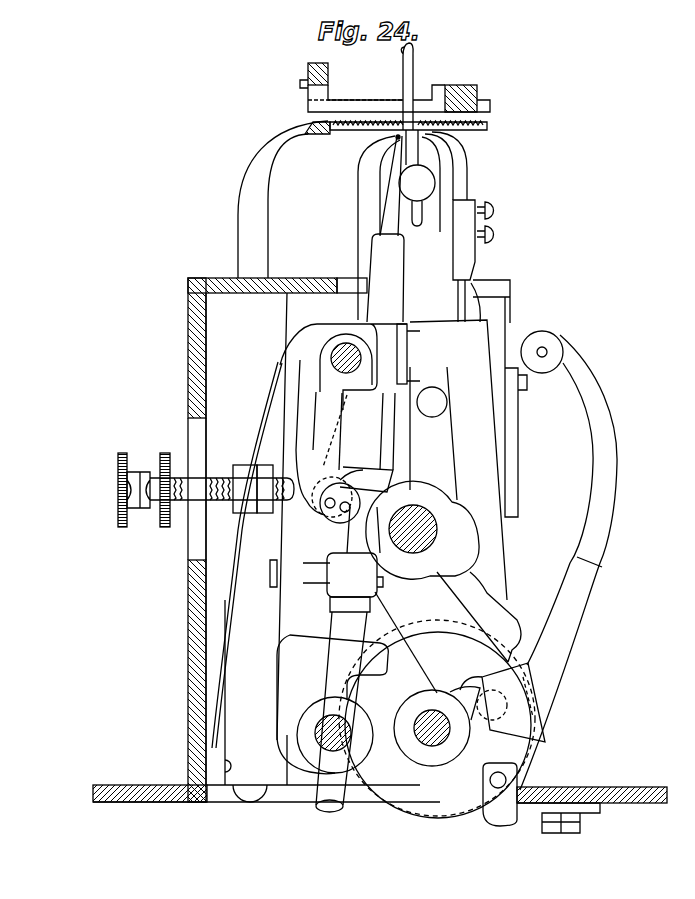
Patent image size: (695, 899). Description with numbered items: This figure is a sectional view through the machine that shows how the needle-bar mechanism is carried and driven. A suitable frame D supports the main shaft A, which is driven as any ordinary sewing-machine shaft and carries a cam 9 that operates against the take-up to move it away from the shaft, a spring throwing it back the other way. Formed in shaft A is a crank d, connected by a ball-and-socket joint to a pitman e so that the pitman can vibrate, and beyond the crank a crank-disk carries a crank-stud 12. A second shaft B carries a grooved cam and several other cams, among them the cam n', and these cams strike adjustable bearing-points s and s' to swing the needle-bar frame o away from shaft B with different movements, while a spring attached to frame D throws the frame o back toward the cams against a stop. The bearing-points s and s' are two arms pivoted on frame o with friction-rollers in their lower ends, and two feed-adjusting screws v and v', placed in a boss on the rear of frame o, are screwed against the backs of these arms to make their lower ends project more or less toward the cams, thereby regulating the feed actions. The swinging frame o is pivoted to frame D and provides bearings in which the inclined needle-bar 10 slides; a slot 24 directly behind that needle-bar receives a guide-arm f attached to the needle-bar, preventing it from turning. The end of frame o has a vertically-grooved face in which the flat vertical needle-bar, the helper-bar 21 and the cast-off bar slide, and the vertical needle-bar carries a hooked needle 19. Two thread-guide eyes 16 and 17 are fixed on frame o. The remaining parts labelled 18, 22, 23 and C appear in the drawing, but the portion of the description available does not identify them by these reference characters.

The frame D is at (190, 385).
The top plate block 23 is at (477, 97).
The hooked needle 19 is at (417, 134).
The helper-bar 21 is at (396, 138).
The arched arm 22 is at (243, 183).
The hook needle 18 is at (397, 166).
The slot 24 is at (478, 262).
The inclined needle-bar 10 is at (368, 318).
The thread-guide eye 17 is at (420, 332).
The thread-guide eye 16 is at (420, 383).
The feed-adjusting screw v' is at (123, 490).
The feed-adjusting screw v is at (221, 488).
The adjustable bearing-point s is at (331, 516).
The adjustable bearing-point s' is at (340, 454).
The second shaft B is at (422, 530).
The cam n' is at (456, 553).
The crank-stud 12 is at (510, 622).
The guide-arm f is at (330, 578).
The pitman e is at (437, 713).
The swinging needle-bar frame o is at (332, 704).
The shaft A is at (437, 726).
The cam 9 is at (434, 760).
The crank d is at (496, 784).
The curved arm C is at (568, 560).